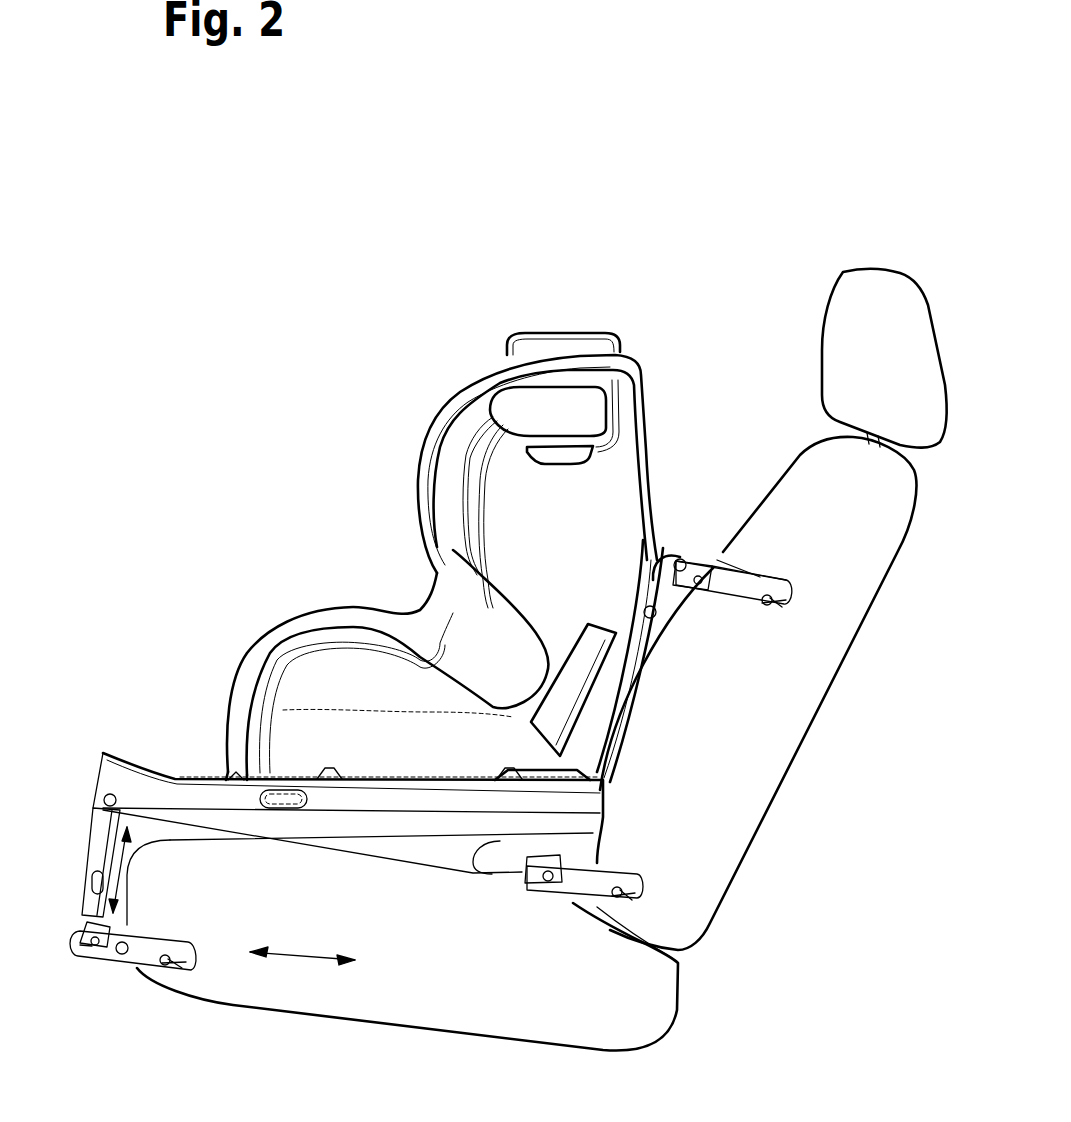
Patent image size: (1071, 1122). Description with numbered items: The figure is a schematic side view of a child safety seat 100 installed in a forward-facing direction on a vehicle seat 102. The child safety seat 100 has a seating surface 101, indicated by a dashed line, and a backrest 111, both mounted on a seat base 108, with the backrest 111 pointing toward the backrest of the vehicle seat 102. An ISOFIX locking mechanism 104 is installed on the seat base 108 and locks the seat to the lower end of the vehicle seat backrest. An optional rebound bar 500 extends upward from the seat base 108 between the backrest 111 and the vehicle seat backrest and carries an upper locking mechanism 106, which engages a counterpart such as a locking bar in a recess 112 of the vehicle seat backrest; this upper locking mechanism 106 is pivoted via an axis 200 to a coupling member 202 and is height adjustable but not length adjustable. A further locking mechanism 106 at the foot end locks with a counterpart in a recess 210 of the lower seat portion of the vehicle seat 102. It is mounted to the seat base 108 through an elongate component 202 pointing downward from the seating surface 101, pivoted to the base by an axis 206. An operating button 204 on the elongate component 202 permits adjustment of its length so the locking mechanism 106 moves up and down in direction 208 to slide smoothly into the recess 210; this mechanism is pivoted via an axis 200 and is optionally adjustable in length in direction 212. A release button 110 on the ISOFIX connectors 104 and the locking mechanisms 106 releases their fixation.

The child safety seat 100 is at (479, 527).
The seating surface 101 is at (350, 707).
The vehicle seat 102 is at (817, 667).
The ISOFIX locking mechanism 104 is at (570, 885).
The locking mechanism 106 is at (137, 957).
The seat base 108 is at (133, 752).
The release button 110 is at (80, 953).
The backrest 111 is at (650, 456).
The recess 112 is at (752, 575).
The axis 200 is at (120, 955).
The elongate component 202 is at (102, 840).
The operating button 204 is at (92, 880).
The axis 206 is at (103, 798).
The direction 208 is at (123, 857).
The recess 210 is at (193, 957).
The direction 212 is at (303, 953).
The rebound bar 500 is at (630, 632).